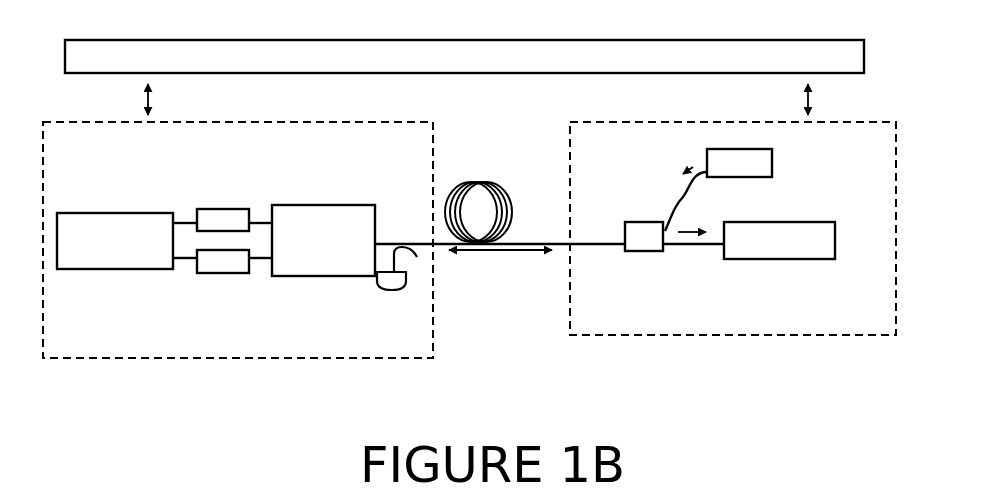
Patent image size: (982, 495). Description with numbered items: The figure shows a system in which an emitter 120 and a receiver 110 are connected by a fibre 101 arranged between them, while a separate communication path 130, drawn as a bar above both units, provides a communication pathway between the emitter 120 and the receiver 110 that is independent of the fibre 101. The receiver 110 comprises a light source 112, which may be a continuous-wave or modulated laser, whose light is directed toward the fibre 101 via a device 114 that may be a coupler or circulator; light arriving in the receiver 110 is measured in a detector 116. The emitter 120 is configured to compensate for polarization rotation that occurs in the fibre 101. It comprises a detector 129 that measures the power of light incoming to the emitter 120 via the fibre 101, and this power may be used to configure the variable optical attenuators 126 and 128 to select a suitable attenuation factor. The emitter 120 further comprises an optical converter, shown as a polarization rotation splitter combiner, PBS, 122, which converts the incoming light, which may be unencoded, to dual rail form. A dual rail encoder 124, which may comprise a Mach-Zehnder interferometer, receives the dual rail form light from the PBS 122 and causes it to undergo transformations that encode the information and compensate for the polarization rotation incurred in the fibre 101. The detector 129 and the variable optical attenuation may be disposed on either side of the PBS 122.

The communication path 130 is at (502, 72).
The emitter 120 is at (238, 240).
The dual rail encoder 124 is at (133, 256).
The variable optical attenuator 128 is at (222, 221).
The variable optical attenuator 126 is at (220, 264).
The polarization rotation splitter combiner (PBS) 122 is at (347, 260).
The detector 129 is at (393, 283).
The fibre 101 is at (517, 246).
The receiver 110 is at (733, 228).
The device (coupler or circulator) 114 is at (637, 231).
The light source 112 is at (758, 160).
The detector 116 is at (779, 240).